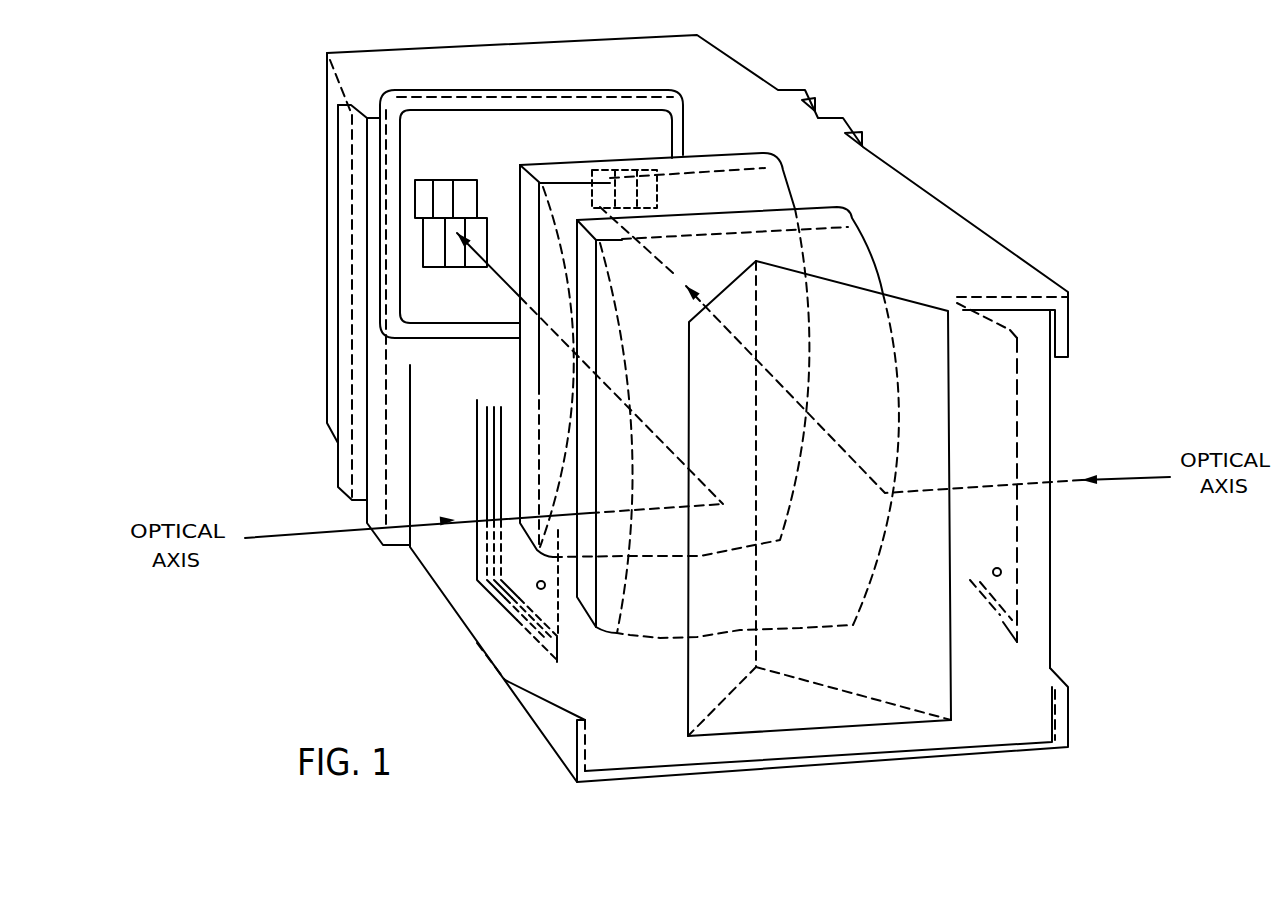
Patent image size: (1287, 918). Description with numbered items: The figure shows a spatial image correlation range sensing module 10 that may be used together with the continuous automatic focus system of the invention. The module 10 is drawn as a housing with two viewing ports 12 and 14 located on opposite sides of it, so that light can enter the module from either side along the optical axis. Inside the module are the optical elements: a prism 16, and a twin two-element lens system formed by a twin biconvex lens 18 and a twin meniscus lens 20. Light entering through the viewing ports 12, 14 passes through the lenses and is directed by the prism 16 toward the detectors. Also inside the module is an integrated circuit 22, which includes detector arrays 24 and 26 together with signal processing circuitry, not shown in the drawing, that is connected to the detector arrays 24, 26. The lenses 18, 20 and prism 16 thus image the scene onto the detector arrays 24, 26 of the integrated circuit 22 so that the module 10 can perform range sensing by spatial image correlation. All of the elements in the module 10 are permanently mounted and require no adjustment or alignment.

The module 10 is at (300, 247).
The viewing port 12 is at (1003, 573).
The viewing port 14 is at (537, 588).
The prism 16 is at (913, 297).
The twin biconvex lens 18 is at (848, 208).
The twin meniscus lens 20 is at (768, 152).
The integrated circuit 22 is at (492, 85).
The detector array 24 is at (614, 176).
The detector array 26 is at (431, 178).